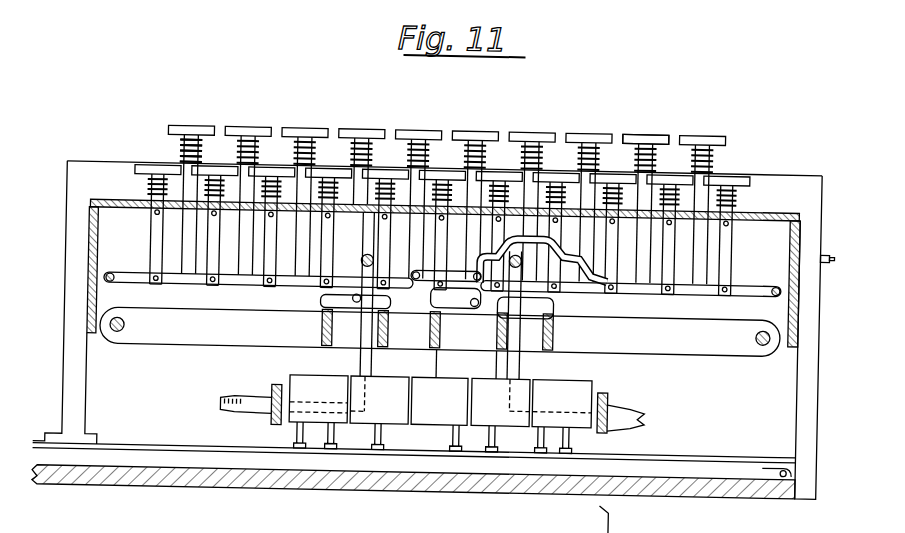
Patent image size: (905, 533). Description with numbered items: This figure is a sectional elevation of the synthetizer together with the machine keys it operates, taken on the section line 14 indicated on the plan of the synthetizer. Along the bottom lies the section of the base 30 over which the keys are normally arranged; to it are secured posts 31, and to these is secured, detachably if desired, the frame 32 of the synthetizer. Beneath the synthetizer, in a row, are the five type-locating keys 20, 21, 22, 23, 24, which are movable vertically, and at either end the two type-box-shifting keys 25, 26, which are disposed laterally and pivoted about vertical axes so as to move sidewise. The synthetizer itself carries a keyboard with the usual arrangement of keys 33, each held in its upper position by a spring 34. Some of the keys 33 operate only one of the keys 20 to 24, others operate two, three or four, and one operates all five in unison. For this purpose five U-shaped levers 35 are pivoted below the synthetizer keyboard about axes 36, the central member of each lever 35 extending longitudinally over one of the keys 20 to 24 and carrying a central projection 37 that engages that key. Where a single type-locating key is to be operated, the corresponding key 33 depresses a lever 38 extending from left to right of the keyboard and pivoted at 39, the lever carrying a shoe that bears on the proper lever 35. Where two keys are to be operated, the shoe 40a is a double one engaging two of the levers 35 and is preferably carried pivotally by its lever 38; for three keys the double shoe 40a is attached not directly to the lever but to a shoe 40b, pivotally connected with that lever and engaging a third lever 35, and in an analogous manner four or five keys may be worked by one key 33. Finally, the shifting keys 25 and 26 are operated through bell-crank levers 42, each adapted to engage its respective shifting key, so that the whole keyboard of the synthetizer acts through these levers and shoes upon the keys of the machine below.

The key 14 is at (626, 130).
The type-locating key 20 is at (562, 417).
The type-locating key 21 is at (500, 415).
The type-locating key 22 is at (439, 414).
The type-locating key 23 is at (379, 413).
The type-locating key 24 is at (318, 412).
The type-box-shifting key 25 is at (279, 391).
The type-box-shifting key 26 is at (609, 392).
The section of the base 30 is at (240, 493).
The post 31 is at (70, 410).
The frame of the synthetizer 32 is at (127, 181).
The key 33 is at (318, 131).
The spring 34 is at (176, 152).
The U-shaped lever 35 is at (440, 332).
The axis 36 is at (116, 339).
The central projection 37 is at (497, 358).
The lever 38 is at (274, 290).
The pivot 39 is at (111, 282).
The double shoe 40a is at (530, 306).
The shoe 40b is at (432, 292).
The bell-crank lever 42 is at (364, 210).